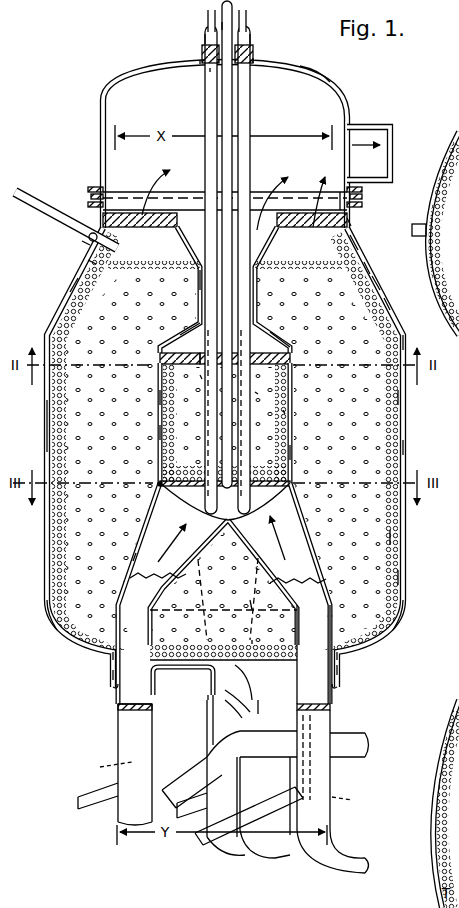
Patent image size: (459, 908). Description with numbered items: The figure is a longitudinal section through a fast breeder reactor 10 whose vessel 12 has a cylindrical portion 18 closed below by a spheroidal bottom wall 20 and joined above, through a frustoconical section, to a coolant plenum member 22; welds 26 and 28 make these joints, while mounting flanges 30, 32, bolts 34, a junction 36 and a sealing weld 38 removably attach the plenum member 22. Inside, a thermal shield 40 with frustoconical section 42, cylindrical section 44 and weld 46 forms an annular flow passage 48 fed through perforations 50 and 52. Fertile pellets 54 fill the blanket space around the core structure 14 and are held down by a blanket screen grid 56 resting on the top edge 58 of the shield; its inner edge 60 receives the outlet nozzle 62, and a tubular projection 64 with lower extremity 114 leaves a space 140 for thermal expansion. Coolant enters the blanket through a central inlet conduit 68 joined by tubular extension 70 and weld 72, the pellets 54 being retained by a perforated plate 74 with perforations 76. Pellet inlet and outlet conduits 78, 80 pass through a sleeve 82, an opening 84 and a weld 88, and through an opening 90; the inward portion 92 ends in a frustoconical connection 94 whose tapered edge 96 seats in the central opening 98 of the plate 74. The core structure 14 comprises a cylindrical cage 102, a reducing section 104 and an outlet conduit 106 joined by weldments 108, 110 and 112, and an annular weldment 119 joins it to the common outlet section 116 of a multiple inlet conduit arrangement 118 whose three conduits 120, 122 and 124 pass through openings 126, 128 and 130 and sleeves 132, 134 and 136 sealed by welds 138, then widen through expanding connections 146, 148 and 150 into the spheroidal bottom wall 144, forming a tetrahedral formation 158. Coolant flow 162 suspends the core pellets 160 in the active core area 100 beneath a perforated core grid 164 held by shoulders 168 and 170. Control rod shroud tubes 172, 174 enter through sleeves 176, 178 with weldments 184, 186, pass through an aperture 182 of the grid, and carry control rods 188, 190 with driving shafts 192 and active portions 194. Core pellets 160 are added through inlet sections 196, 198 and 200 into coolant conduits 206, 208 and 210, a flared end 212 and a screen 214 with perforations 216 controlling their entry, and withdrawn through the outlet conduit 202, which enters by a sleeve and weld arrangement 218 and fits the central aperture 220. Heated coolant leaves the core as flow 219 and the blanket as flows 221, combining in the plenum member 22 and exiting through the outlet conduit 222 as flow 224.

The fast breeder reactor 10 is at (62, 94).
The vessel 12 is at (398, 420).
The core structure 14 is at (289, 414).
The cylindrical portion 18 is at (48, 427).
The spheroidal bottom wall 20 is at (66, 632).
The coolant plenum member 22 is at (314, 74).
The annular structural and sealing weld 26 is at (403, 339).
The annular structural and sealing weld 28 is at (399, 597).
The mounting flange 30 is at (362, 194).
The mounting flange 32 is at (362, 207).
The mounting bolts 34 is at (95, 186).
The junction 36 is at (133, 200).
The non-structural sealing weld 38 is at (90, 199).
The thermal shield and blanket pellet container 40 is at (399, 447).
The frustoconical section 42 is at (366, 262).
The cylindrical section 44 is at (398, 398).
The annular structural and sealing weld 46 is at (386, 300).
The annular flow passage 48 is at (373, 277).
The perforations 50 is at (398, 574).
The perforations 52 is at (352, 238).
The pellets of fertile material 54 is at (70, 293).
The blanket screen grid 56 is at (300, 228).
The top edge 58 is at (113, 229).
The inner peripheral edge 60 is at (174, 229).
The outlet flow nozzle 62 is at (199, 262).
The tubular projection 64 is at (342, 188).
The central inlet conduit 68 is at (362, 740).
The tubular extension 70 is at (260, 710).
The annular sealing structural weld 72 is at (242, 712).
The perforated covering plate 74 is at (297, 662).
The perforations 76 is at (255, 700).
The pellet inlet conduit 78 is at (28, 190).
The pellet outlet conduit 80 is at (178, 790).
The projecting sleeve member 82 is at (80, 243).
The opening 84 is at (88, 262).
The annular weld 88 is at (86, 237).
The opening 90 is at (252, 744).
The inwardly extending portion 92 is at (210, 722).
The frustoconical connection 94 is at (250, 706).
The tapered edge 96 is at (223, 640).
The central opening 98 is at (215, 650).
The active core area 100 is at (289, 452).
The cylindrical cage 102 is at (159, 433).
The reducing section 104 is at (259, 329).
The outlet conduit 106 is at (258, 278).
The annular weldment 108 is at (161, 356).
The annular weldment 110 is at (196, 328).
The annular weldment 112 is at (197, 280).
The lower extremity 114 is at (118, 198).
The common outlet section 116 is at (143, 527).
The multiple inlet conduit arrangement 118 is at (113, 675).
The annular weldment 119 is at (158, 487).
The inlet conduit 120 is at (118, 700).
The inlet conduit 122 is at (206, 618).
The inlet conduit 124 is at (336, 707).
The bottom vessel opening 126 is at (112, 663).
The bottom vessel opening 128 is at (265, 631).
The bottom vessel opening 130 is at (338, 656).
The sleeve member 132 is at (112, 686).
The sleeve member 134 is at (197, 670).
The sleeve member 136 is at (340, 669).
The welds 138 is at (339, 684).
The space 140 is at (351, 228).
The spheroidal bottom wall portion 144 is at (205, 470).
The expanding conduit connection 146 is at (136, 553).
The expanding conduit connection 148 is at (250, 600).
The expanding conduit connection 150 is at (310, 545).
The tetrahedral formation 158 is at (236, 523).
The core pellets 160 is at (159, 398).
The flow arrows 162 is at (178, 540).
The perforated core grid 164 is at (291, 358).
The annular shoulder 168 is at (290, 344).
The annular shoulder 170 is at (287, 388).
The control rod shroud tube 172 is at (206, 40).
The control rod shroud tube 174 is at (249, 36).
The projecting sleeve 176 is at (200, 63).
The projecting sleeve 178 is at (253, 62).
The aperture 182 is at (261, 395).
The annular weldment 184 is at (203, 50).
The annular weldment 186 is at (253, 52).
The control rod 188 is at (208, 20).
The control rod 190 is at (247, 18).
The driving shaft 192 is at (222, 24).
The active portion 194 is at (205, 430).
The inlet conduit section 196 is at (78, 800).
The inlet conduit section 198 is at (178, 800).
The inlet conduit section 200 is at (257, 795).
The outlet core pellet conduit 202 is at (233, 90).
The inlet coolant conduit 206 is at (117, 742).
The inlet coolant conduit 208 is at (206, 748).
The inlet coolant conduit 210 is at (332, 775).
The flared extremity 212 is at (249, 816).
The screen member 214 is at (225, 781).
The perforations 216 is at (311, 757).
The sleeve and weld arrangement 218 is at (210, 70).
The flow arrow 219 is at (270, 192).
The aperture 220 is at (285, 412).
The flow arrows 221 is at (233, 190).
The outlet conduit 222 is at (352, 126).
The flow arrow 224 is at (382, 143).